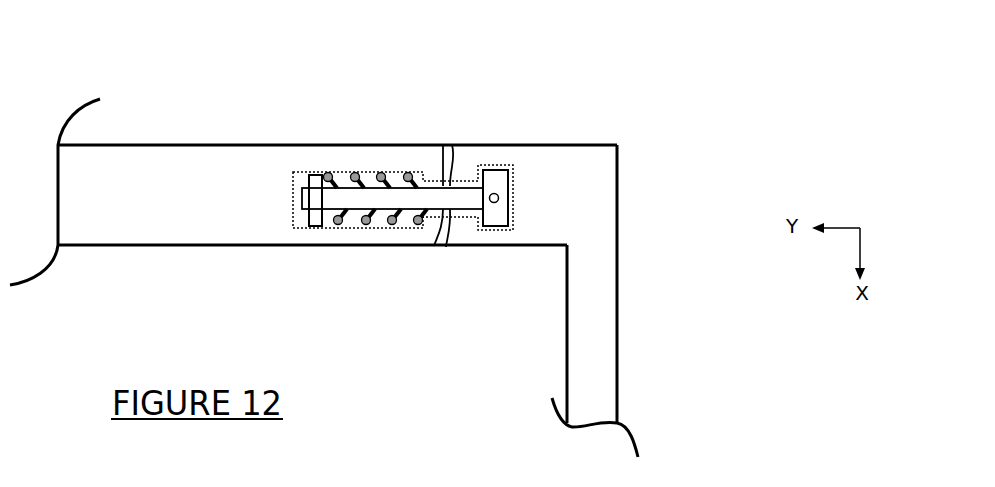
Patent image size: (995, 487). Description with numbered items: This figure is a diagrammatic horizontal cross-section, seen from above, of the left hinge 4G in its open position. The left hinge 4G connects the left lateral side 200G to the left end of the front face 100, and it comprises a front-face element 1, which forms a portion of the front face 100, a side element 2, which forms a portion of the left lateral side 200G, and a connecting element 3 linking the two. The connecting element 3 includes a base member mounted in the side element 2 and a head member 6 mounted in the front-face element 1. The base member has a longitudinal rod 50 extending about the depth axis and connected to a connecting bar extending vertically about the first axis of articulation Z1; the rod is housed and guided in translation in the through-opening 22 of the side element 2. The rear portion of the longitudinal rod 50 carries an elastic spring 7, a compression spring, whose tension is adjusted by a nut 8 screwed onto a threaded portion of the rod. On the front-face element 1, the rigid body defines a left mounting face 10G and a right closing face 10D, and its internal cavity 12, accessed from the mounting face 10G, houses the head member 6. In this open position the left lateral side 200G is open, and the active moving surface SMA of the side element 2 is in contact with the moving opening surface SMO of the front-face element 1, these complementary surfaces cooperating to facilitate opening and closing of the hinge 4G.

The front-face element 1 is at (603, 242).
The side element 2 is at (283, 185).
The connecting element 3 is at (435, 203).
The left hinge 4G is at (642, 94).
The head member 6 is at (505, 180).
The elastic spring 7 is at (366, 226).
The nut 8 is at (316, 228).
The left mounting face 10G is at (495, 160).
The right closing face 10D is at (507, 245).
The internal cavity 12 is at (513, 220).
The through-opening 22 is at (436, 181).
The longitudinal rod 50 is at (380, 194).
The front face 100 is at (617, 372).
The left lateral side 200G is at (163, 243).
The active moving surface SMA is at (452, 143).
The moving opening surface SMO is at (433, 246).
The first axis of articulation Z1 is at (500, 198).